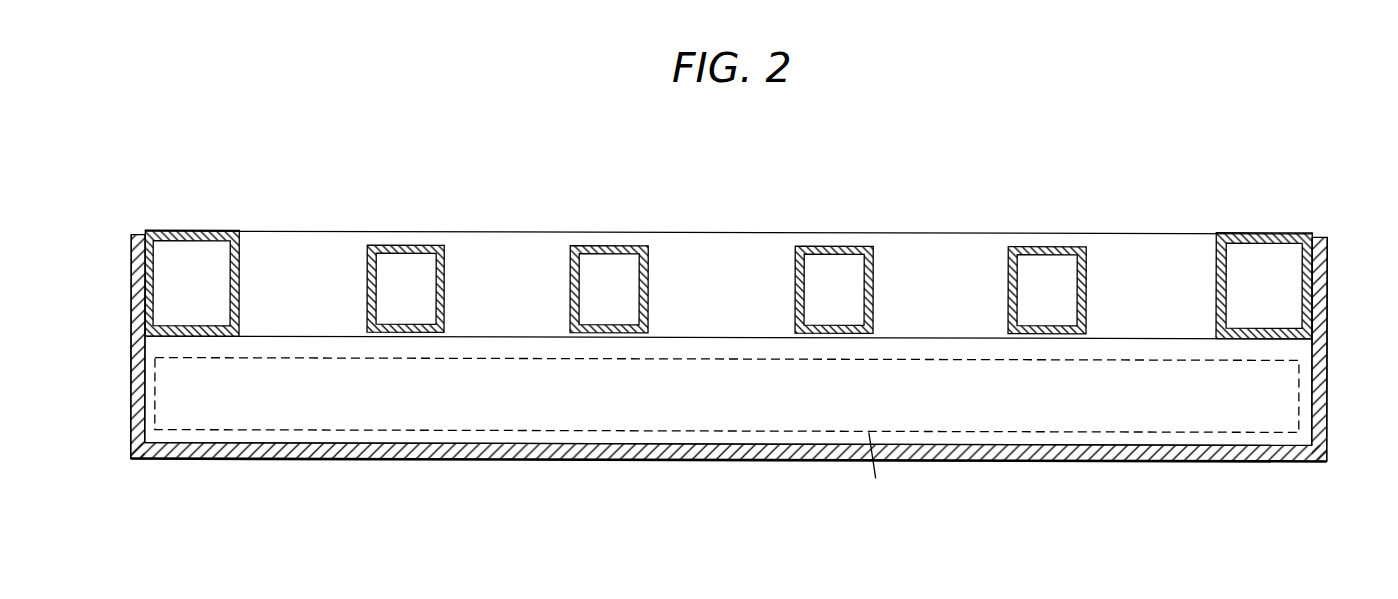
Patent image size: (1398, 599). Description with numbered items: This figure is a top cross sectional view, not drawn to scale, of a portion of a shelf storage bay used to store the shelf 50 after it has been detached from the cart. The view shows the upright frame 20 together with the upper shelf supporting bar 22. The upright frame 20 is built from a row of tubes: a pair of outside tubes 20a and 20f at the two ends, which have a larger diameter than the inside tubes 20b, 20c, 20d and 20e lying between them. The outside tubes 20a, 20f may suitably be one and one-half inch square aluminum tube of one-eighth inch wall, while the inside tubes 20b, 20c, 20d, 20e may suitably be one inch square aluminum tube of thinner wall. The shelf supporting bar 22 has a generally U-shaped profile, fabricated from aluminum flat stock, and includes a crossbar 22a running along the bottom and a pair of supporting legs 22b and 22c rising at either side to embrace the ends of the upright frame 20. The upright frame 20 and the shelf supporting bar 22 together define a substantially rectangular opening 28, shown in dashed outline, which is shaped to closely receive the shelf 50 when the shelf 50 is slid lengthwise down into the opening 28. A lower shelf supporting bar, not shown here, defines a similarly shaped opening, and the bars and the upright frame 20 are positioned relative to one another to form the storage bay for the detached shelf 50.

The upright frame 20 is at (716, 232).
The outside tube 20a is at (186, 231).
The inside tube 20b is at (398, 245).
The inside tube 20c is at (604, 245).
The inside tube 20d is at (831, 245).
The inside tube 20e is at (1038, 245).
The outside tube 20f is at (1255, 233).
The upper shelf supporting bar 22 is at (1180, 461).
The crossbar 22a is at (490, 461).
The supporting leg 22b is at (130, 297).
The supporting leg 22c is at (1328, 333).
The rectangular opening 28 is at (1285, 436).
The shelf 50 is at (876, 471).